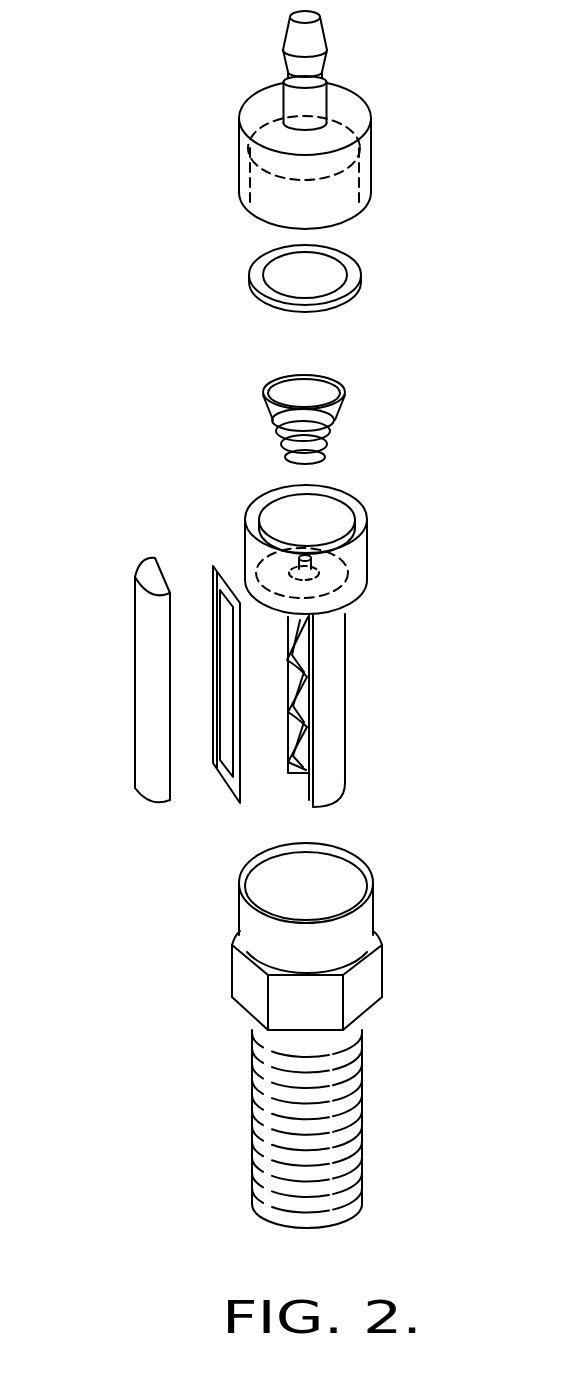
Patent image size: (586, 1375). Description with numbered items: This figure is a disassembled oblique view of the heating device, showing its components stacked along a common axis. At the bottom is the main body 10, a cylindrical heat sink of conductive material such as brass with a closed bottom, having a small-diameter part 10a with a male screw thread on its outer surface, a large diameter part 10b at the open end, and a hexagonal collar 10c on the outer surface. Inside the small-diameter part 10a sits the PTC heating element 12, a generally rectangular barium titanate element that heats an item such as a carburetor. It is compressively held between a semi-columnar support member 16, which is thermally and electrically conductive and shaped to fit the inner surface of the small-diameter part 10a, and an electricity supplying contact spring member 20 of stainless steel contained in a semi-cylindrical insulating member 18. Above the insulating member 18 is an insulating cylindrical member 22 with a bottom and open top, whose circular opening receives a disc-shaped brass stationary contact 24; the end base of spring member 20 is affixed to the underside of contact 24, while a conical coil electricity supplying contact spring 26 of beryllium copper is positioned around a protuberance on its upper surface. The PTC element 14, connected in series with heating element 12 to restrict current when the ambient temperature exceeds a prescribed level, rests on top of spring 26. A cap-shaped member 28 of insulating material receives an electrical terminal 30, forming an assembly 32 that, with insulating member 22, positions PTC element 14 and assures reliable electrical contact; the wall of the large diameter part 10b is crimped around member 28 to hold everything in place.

The main body 10 is at (232, 1032).
The small-diameter part 10a is at (362, 1137).
The large diameter part 10b is at (368, 874).
The collar 10c is at (363, 977).
The PTC heating element 12 is at (223, 613).
The PTC element 14 is at (277, 272).
The support member 16 is at (143, 633).
The semi-cylindrical insulating member 18 is at (333, 641).
The electricity supplying contact spring member 20 is at (303, 727).
The insulating cylindrical member 22 is at (358, 570).
The stationary contact 24 is at (268, 555).
The electricity supplying contact spring 26 is at (333, 429).
The cap-shaped member 28 is at (358, 153).
The electrical terminal 30 is at (292, 40).
The assembly 32 is at (368, 84).